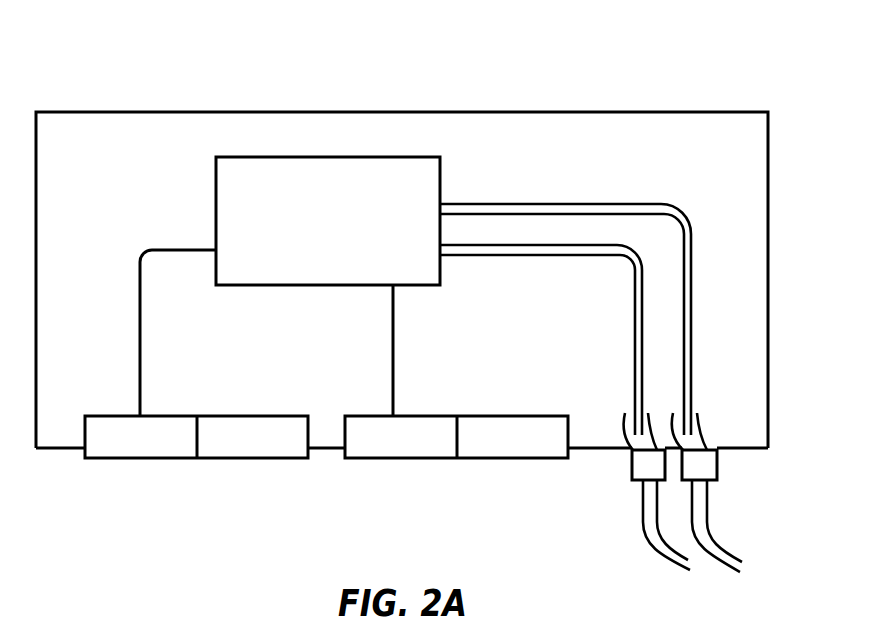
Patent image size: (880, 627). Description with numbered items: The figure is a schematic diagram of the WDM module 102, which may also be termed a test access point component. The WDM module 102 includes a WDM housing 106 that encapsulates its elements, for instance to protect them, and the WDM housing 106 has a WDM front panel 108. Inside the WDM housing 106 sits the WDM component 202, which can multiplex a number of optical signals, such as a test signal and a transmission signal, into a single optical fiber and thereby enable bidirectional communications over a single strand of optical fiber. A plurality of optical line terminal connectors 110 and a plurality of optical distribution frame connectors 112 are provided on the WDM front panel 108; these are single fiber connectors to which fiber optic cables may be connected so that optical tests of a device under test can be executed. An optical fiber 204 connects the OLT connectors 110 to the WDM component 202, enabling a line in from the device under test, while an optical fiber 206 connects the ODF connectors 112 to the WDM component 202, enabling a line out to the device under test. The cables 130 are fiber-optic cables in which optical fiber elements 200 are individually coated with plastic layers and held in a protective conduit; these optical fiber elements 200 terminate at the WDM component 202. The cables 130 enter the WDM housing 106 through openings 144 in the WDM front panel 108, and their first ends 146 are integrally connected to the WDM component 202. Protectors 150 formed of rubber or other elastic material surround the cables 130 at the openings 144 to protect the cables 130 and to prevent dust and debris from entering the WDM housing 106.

The WDM module 102 is at (118, 92).
The WDM housing 106 is at (255, 112).
The WDM front panel 108 is at (327, 448).
The optical line terminal (OLT) connectors 110 is at (160, 458).
The optical distribution frame (ODF) connectors 112 is at (475, 458).
The cables 130 is at (663, 558).
The openings 144 is at (630, 455).
The first ends 146 is at (700, 430).
The protectors 150 is at (717, 465).
The optical fiber elements 200 is at (692, 265).
The WDM component 202 is at (307, 264).
The optical fiber 204 is at (140, 323).
The optical fiber 206 is at (393, 331).